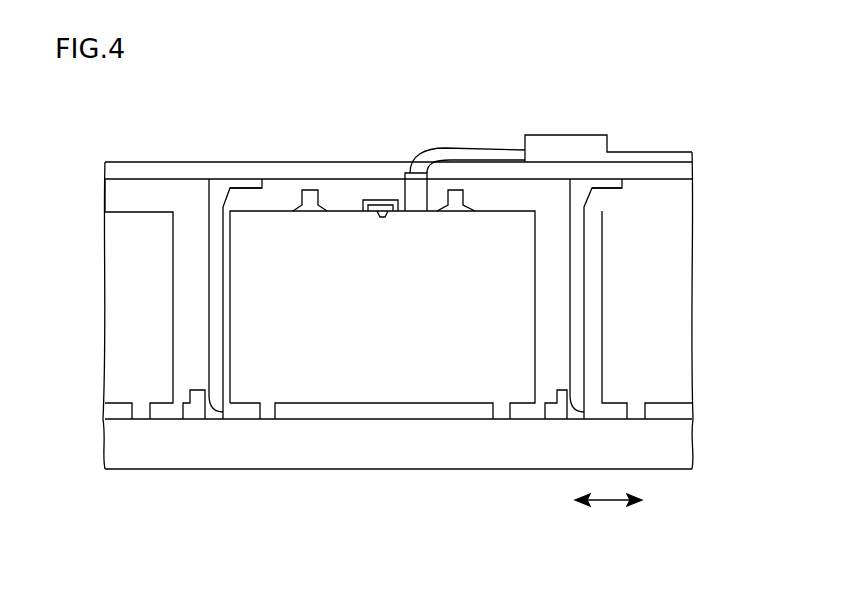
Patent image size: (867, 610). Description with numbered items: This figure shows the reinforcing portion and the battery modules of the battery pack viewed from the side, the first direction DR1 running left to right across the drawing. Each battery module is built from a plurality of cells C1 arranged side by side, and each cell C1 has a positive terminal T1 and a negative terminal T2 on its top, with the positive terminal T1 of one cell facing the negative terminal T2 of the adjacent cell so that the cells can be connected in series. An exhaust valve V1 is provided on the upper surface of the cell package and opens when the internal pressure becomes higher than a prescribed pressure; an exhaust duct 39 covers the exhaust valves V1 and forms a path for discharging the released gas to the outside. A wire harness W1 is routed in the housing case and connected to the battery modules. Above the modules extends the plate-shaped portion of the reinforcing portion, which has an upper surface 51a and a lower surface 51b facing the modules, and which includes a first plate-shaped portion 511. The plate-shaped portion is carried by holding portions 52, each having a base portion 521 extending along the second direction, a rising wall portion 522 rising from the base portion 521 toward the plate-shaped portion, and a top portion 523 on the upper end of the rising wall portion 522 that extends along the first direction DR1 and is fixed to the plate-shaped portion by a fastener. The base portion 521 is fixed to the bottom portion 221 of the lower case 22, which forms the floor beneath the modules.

The upper surface 51a is at (130, 166).
The lower surface 51b is at (129, 182).
The first plate-shaped portion 511 is at (655, 175).
The holding portion 52 is at (382, 301).
The base portion 521 is at (375, 450).
The rising wall portion 522 is at (218, 264).
The top portion 523 is at (230, 186).
The cell C1 is at (472, 380).
The positive terminal T1 is at (308, 190).
The negative terminal T2 is at (455, 190).
The exhaust duct 39 is at (380, 200).
The exhaust valve V1 is at (386, 216).
The wire harness W1 is at (497, 160).
The lower case 22 is at (398, 485).
The bottom portion 221 is at (413, 442).
The first direction DR1 is at (610, 501).